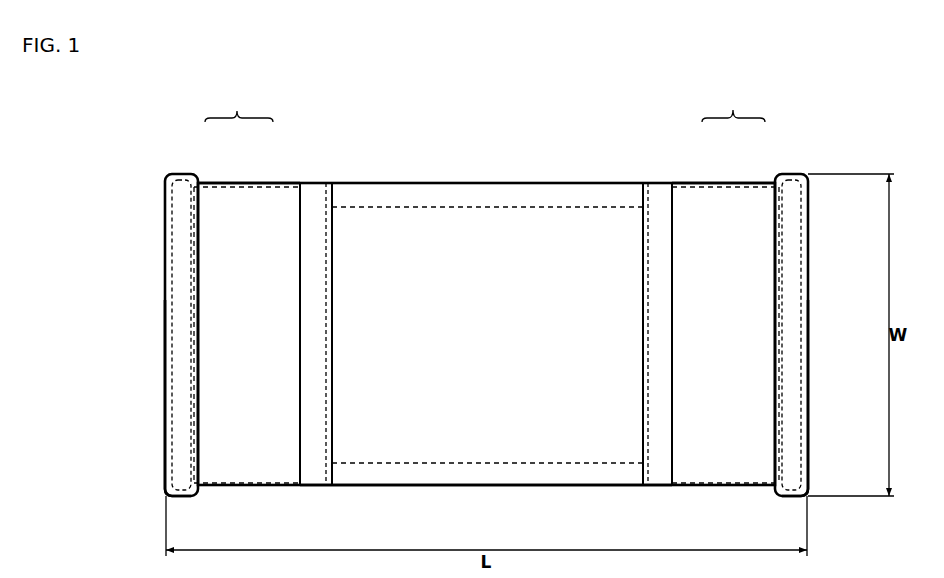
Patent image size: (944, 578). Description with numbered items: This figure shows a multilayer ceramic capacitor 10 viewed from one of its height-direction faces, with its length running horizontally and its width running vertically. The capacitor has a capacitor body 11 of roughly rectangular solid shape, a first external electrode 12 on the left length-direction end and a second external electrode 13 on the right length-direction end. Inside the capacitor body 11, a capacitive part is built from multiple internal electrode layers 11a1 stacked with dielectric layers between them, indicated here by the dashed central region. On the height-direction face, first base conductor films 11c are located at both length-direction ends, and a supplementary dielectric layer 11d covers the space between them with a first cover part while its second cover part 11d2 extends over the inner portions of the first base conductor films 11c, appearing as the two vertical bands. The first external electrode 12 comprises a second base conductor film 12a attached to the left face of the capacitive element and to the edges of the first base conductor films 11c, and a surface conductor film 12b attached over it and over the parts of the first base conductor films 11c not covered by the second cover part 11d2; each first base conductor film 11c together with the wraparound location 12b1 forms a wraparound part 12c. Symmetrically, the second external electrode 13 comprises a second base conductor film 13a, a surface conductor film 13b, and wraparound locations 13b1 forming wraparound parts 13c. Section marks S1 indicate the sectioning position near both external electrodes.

The multilayer ceramic capacitor 10 is at (160, 188).
The capacitor body 11 is at (407, 183).
The internal electrode layers 11a1 is at (404, 453).
The first base conductor films 11c is at (262, 203).
The supplementary dielectric layers 11d is at (550, 198).
The second cover part 11d2 is at (314, 203).
The first external electrode 12 is at (165, 367).
The second base conductor film 12a is at (177, 259).
The surface conductor film 12b is at (165, 422).
The wraparound location 12b1 is at (217, 203).
The wraparound parts 12c is at (239, 104).
The second external electrode 13 is at (808, 362).
The second base conductor film 13a is at (796, 259).
The surface conductor film 13b is at (803, 420).
The wraparound location 13b1 is at (757, 203).
The wraparound parts 13c is at (733, 104).
The section line S1 is at (165, 335).